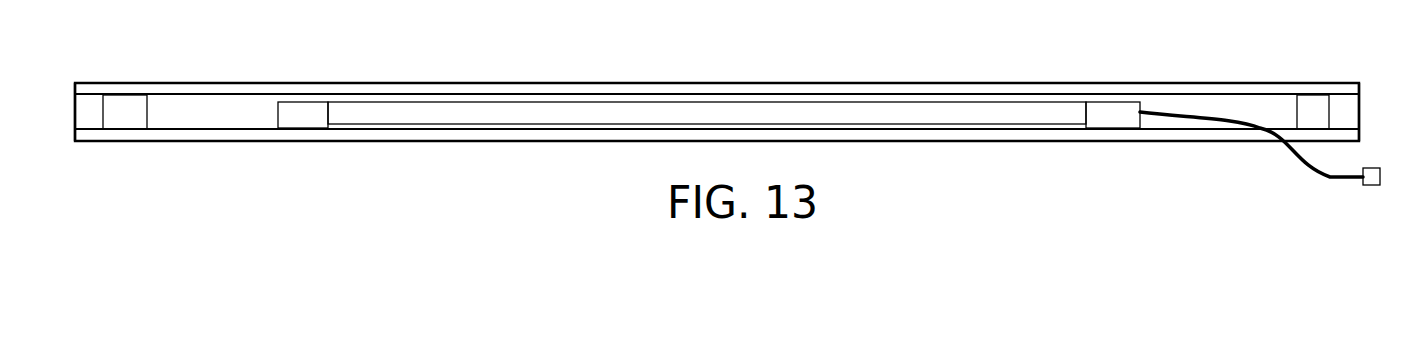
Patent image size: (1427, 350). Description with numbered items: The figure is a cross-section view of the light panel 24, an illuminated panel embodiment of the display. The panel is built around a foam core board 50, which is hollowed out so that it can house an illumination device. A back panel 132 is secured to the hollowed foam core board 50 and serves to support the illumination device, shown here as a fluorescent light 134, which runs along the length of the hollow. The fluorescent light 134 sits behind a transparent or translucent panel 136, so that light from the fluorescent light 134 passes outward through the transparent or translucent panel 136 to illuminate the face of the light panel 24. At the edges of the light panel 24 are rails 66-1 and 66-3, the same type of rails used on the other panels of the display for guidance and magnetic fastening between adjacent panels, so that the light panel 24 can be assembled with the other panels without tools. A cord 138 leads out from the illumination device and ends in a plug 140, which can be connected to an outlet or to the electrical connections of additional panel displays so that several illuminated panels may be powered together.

The light panel 24 is at (728, 58).
The foam core board 50 is at (138, 122).
The rail 66-1 is at (75, 110).
The rail 66-3 is at (1360, 100).
The back panel 132 is at (262, 142).
The fluorescent light 134 is at (455, 102).
The transparent or translucent panel 136 is at (300, 84).
The cord 138 is at (1308, 172).
The plug 140 is at (1383, 173).